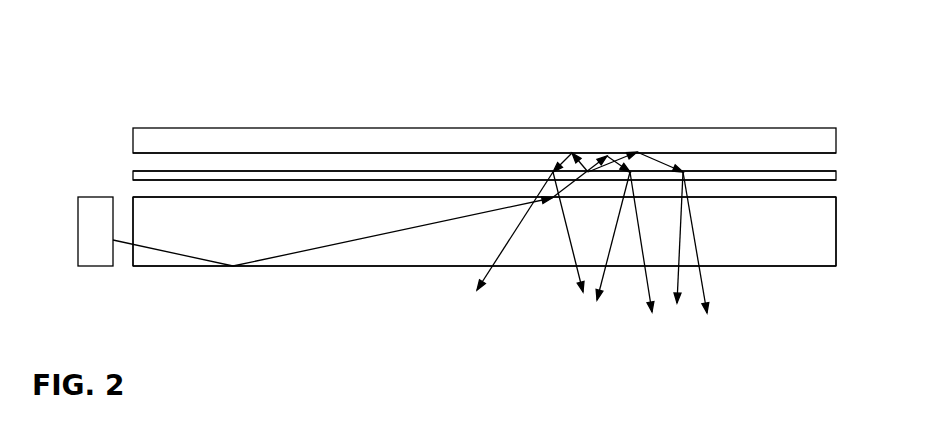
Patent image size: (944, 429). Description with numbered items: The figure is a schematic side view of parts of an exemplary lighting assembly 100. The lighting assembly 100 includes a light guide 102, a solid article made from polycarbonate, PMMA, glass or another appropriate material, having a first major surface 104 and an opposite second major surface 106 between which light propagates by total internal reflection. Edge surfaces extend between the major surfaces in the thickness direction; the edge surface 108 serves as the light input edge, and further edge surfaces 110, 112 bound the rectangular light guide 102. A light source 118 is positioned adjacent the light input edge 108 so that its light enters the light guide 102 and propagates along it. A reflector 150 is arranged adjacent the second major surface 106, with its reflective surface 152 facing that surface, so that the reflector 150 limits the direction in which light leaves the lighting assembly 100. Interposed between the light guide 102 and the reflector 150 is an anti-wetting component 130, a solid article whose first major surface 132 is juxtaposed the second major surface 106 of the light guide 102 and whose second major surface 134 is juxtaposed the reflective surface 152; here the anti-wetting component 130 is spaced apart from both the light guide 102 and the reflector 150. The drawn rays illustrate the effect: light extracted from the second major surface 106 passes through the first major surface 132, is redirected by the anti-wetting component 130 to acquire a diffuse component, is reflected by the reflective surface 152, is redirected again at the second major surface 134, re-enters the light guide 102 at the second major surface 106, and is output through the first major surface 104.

The lighting assembly 100 is at (138, 42).
The light guide 102 is at (412, 256).
The first major surface 104 is at (742, 266).
The second major surface 106 is at (221, 197).
The light input edge 108 is at (132, 260).
The edge surface 110 is at (343, 247).
The edge surface 112 is at (836, 226).
The light source 118 is at (96, 197).
The anti-wetting component 130 is at (368, 175).
The first major surface 132 is at (795, 181).
The second major surface 134 is at (467, 172).
The reflector 150 is at (568, 140).
The reflective surface 152 is at (745, 153).